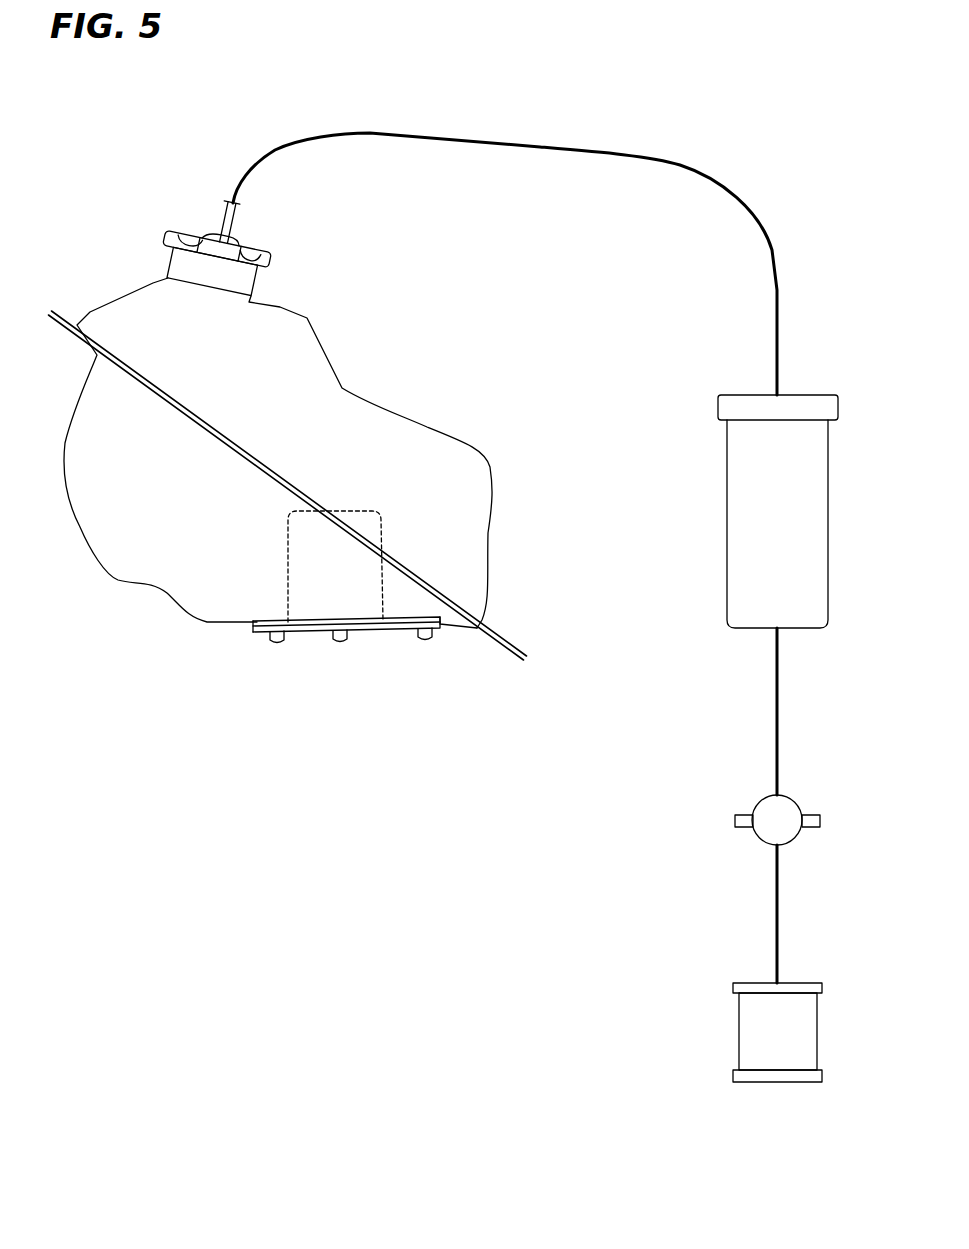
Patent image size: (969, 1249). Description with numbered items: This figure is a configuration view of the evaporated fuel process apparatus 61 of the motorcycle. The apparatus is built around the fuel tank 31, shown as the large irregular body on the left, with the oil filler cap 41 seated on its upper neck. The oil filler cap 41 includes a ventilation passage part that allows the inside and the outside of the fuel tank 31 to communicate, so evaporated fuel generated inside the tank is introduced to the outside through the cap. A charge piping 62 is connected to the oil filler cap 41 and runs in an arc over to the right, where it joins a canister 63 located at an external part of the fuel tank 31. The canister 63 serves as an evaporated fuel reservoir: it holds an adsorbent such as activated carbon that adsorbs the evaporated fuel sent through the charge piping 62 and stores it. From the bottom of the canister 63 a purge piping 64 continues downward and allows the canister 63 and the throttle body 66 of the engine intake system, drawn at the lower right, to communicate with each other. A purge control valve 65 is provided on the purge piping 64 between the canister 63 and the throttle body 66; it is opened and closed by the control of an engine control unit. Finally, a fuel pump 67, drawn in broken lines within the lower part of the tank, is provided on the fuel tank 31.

The fuel tank 31 is at (312, 319).
The oil filler cap 41 is at (183, 222).
The evaporated fuel process apparatus 61 is at (541, 569).
The charge piping 62 is at (770, 228).
The canister 63 is at (733, 515).
The purge piping 64 is at (775, 688).
The purge control valve 65 is at (765, 807).
The throttle body 66 is at (750, 1036).
The fuel pump 67 is at (297, 566).